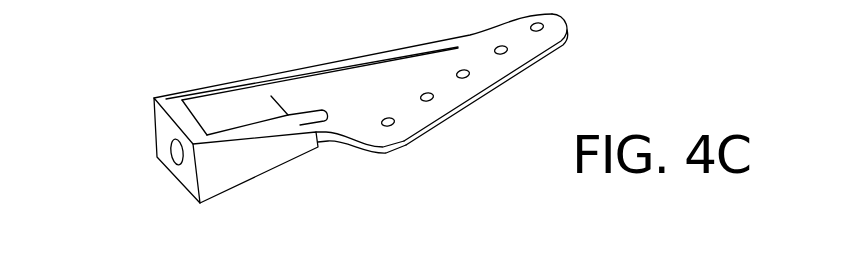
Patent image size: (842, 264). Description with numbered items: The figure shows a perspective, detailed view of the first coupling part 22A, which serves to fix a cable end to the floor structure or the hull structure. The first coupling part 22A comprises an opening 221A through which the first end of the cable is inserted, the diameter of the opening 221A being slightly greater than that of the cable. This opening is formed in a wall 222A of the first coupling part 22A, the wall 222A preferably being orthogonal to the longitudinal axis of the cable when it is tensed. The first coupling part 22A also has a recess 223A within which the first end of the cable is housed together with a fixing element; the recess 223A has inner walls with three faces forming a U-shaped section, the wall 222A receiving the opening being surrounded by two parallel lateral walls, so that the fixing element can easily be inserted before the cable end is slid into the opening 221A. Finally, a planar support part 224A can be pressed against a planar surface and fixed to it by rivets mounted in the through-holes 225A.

The first coupling part 22A is at (339, 113).
The opening 221A is at (173, 153).
The wall 222A is at (165, 125).
The recess 223A is at (232, 110).
The planar support part 224A is at (519, 37).
The through-holes 225A is at (463, 78).